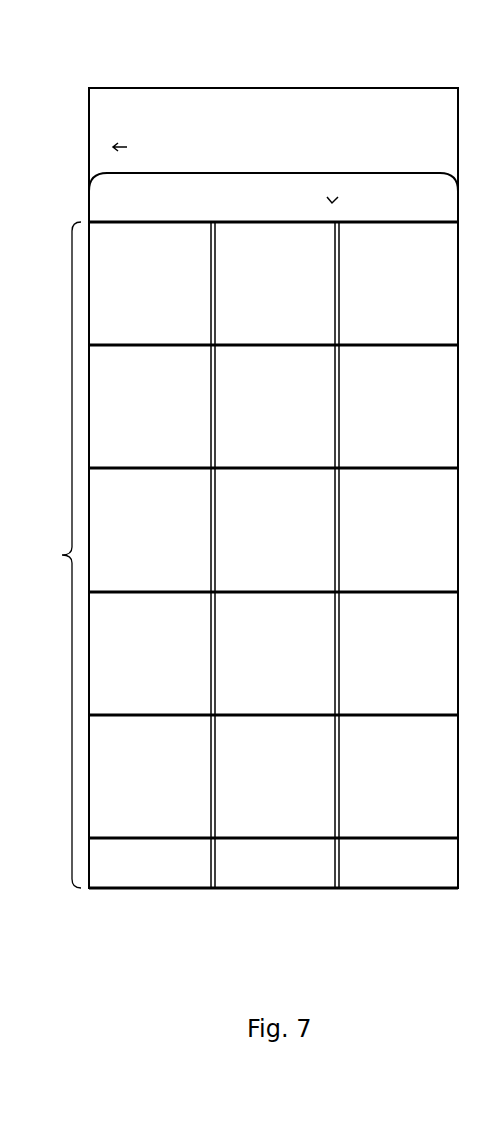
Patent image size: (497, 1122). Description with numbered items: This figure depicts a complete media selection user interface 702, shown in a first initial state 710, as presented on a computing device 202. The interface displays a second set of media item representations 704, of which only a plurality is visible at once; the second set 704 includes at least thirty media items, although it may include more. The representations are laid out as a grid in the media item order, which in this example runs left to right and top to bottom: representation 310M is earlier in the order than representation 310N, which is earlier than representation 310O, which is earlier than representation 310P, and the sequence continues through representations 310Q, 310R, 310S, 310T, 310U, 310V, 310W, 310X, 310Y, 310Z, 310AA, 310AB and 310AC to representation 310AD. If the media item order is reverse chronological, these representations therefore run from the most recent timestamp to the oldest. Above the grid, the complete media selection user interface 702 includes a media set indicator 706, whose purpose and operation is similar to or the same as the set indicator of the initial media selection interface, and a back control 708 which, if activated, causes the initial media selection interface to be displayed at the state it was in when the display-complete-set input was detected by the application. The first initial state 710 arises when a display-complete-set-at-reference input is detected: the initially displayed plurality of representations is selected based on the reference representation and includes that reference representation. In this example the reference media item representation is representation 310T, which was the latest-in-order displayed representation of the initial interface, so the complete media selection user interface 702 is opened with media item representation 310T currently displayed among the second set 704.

The computing device 202 is at (387, 88).
The complete media selection user interface 702 is at (113, 66).
The second set of media item representations 704 is at (48, 555).
The media set indicator 706 is at (332, 190).
The back control 708 is at (142, 143).
The first initial state 710 is at (260, 44).
The media item representation 310M is at (122, 322).
The media item representation 310N is at (248, 322).
The media item representation 310O is at (371, 322).
The media item representation 310P is at (124, 445).
The media item representation 310Q is at (248, 445).
The media item representation 310R is at (372, 445).
The media item representation 310S is at (124, 568).
The media item representation 310T is at (250, 568).
The media item representation 310U is at (372, 568).
The media item representation 310V is at (124, 692).
The media item representation 310W is at (245, 692).
The media item representation 310X is at (372, 692).
The media item representation 310Y is at (124, 815).
The media item representation 310Z is at (250, 815).
The media item representation 310AA is at (364, 815).
The media item representation 310AB is at (110, 888).
The media item representation 310AC is at (233, 888).
The media item representation 310AD is at (348, 888).